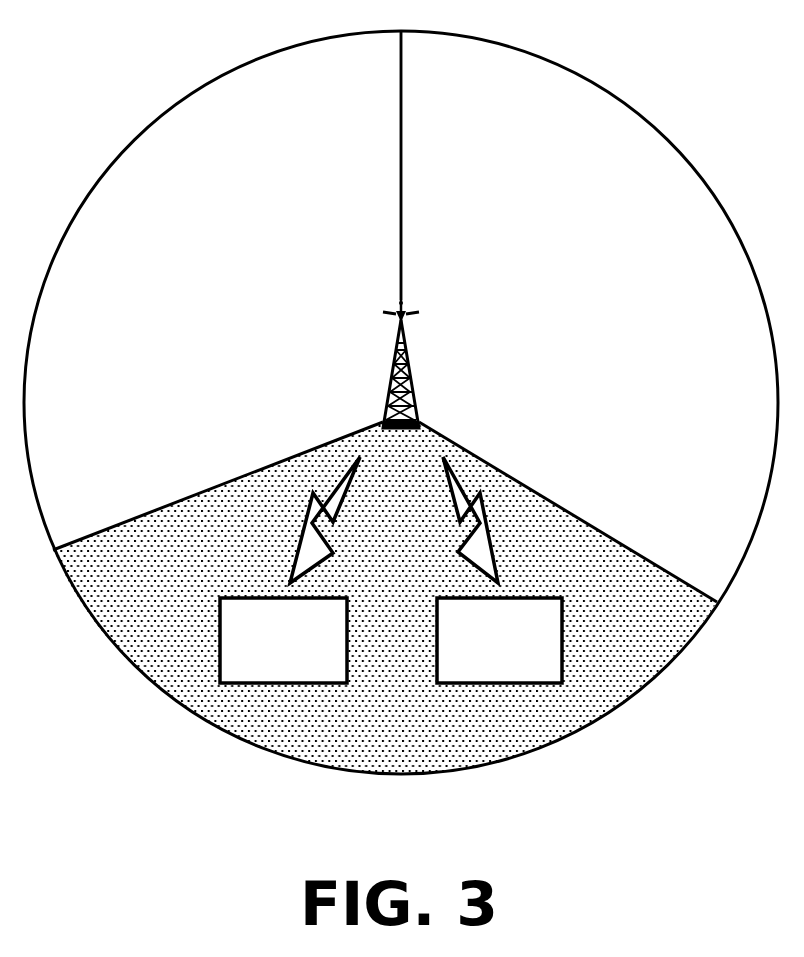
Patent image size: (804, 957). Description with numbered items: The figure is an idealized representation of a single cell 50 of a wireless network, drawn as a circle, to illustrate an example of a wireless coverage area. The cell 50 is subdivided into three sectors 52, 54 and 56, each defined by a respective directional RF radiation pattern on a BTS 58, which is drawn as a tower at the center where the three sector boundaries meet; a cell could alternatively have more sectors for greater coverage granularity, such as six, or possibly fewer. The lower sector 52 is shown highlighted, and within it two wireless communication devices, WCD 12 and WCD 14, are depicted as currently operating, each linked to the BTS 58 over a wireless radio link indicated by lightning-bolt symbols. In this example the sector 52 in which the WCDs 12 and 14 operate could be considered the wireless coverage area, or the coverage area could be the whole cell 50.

The cell 50 is at (605, 90).
The sector 52 is at (422, 726).
The sector 54 is at (595, 280).
The sector 56 is at (255, 284).
The BTS 58 is at (408, 347).
The WCD 12 is at (245, 598).
The WCD 14 is at (527, 598).